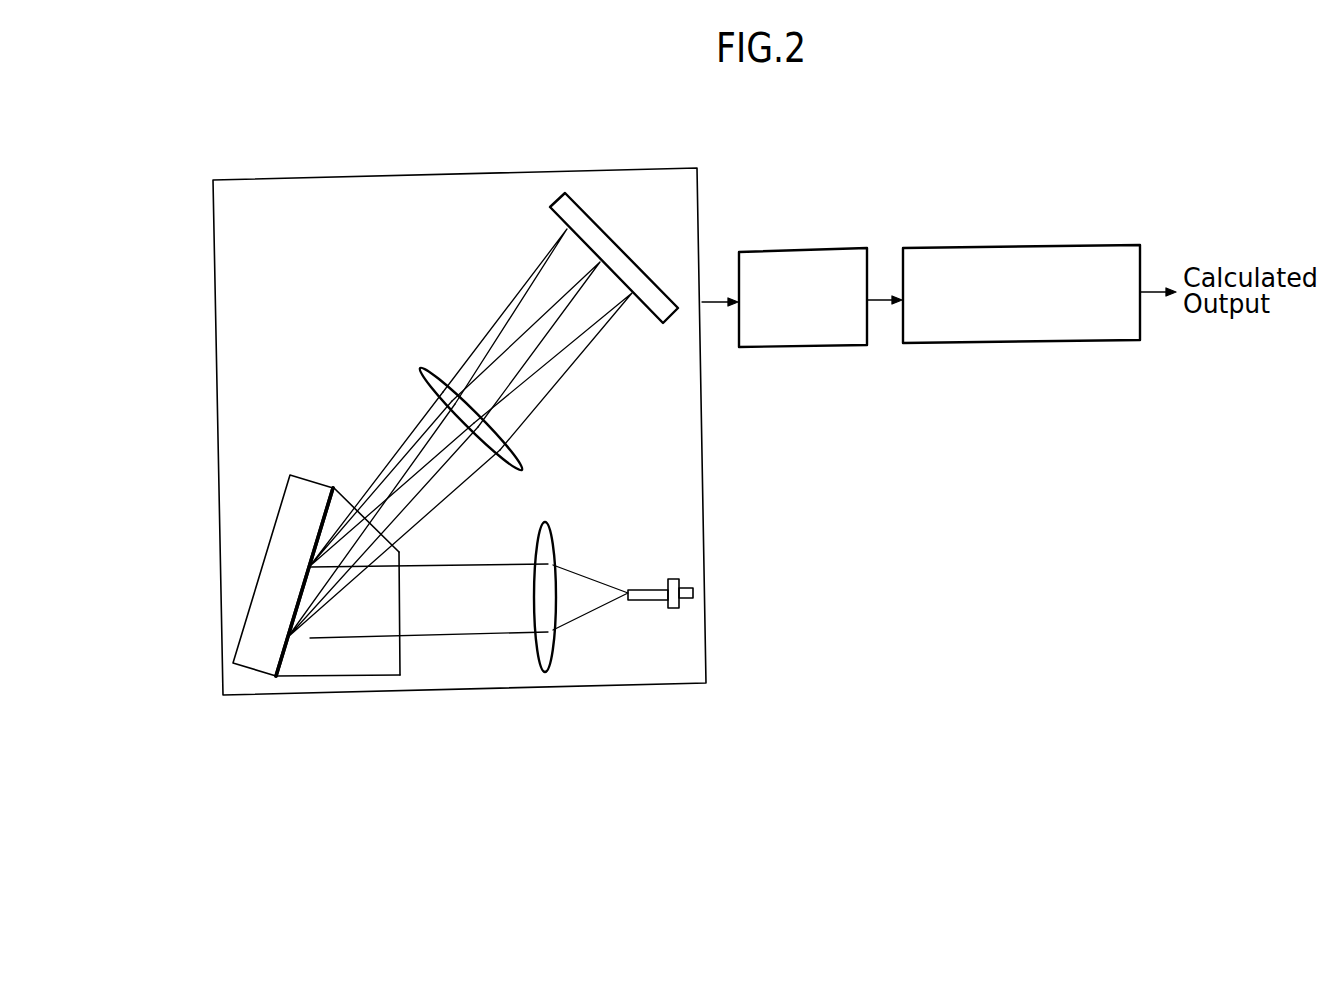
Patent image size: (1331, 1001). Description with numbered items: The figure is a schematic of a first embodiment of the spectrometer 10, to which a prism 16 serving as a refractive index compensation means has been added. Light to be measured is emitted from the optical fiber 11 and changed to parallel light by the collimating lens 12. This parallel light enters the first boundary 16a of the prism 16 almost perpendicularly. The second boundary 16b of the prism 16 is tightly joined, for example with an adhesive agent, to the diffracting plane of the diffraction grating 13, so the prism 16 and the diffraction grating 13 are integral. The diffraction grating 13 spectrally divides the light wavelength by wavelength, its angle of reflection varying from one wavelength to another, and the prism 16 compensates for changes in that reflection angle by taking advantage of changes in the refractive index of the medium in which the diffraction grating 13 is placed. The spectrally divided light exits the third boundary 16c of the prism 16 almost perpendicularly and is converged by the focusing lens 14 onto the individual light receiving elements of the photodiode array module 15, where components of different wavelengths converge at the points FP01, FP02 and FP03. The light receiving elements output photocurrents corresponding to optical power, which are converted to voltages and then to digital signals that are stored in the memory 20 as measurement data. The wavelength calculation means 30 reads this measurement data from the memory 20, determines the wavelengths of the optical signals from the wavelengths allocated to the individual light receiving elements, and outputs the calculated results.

The spectrometer 10 is at (280, 178).
The optical fiber 11 is at (673, 579).
The collimating lens 12 is at (553, 657).
The diffraction grating 13 is at (248, 673).
The focusing lens 14 is at (440, 367).
The photodiode array module 15 is at (671, 283).
The prism 16 is at (449, 542).
The first boundary 16a is at (402, 660).
The second boundary 16b is at (284, 522).
The third boundary 16c is at (347, 497).
The memory 20 is at (834, 247).
The wavelength calculation means 30 is at (1023, 246).
The focal point FP01 is at (567, 229).
The focal point FP02 is at (600, 262).
The focal point FP03 is at (632, 293).